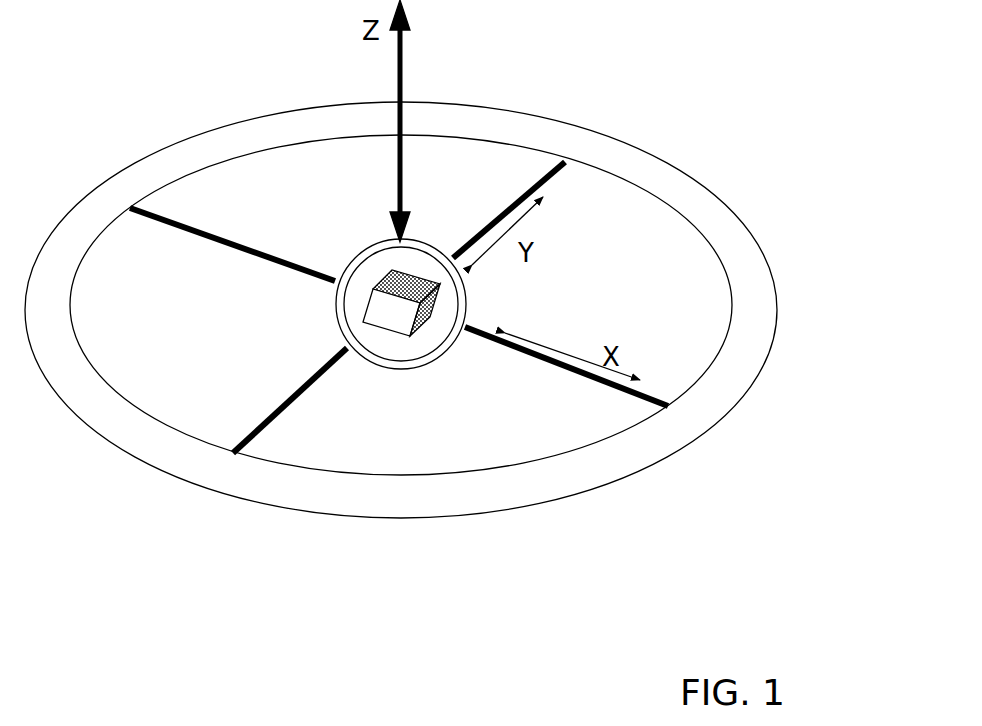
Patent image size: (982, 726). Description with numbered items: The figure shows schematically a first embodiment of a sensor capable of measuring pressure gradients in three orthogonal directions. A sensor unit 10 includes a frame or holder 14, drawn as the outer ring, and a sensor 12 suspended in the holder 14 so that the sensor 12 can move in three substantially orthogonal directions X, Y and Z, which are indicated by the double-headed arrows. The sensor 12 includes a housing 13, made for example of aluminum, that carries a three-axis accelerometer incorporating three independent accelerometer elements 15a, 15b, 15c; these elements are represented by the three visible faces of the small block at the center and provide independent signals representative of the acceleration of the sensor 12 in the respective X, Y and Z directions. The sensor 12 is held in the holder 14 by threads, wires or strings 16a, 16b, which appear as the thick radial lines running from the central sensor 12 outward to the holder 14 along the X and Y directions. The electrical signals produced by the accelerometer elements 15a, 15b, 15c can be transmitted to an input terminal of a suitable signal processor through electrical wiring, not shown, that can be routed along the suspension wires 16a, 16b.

The sensor unit 10 is at (657, 489).
The sensor 12 is at (425, 370).
The housing 13 is at (340, 316).
The frame or holder 14 is at (750, 250).
The accelerometer element 15a is at (382, 318).
The accelerometer element 15b is at (432, 315).
The accelerometer element 15c is at (400, 283).
The suspension wire 16a is at (197, 227).
The suspension wire 16b is at (531, 183).